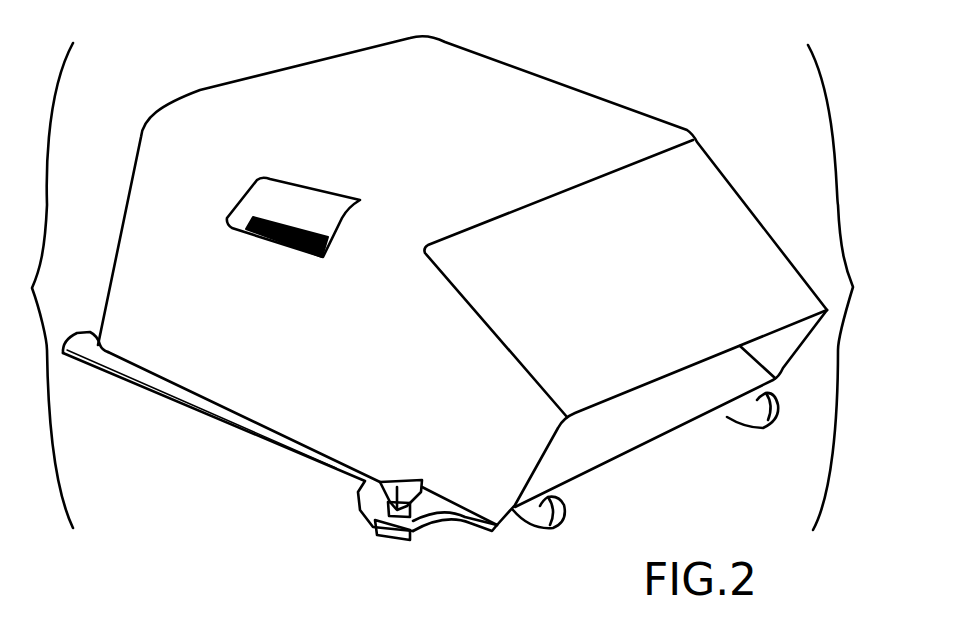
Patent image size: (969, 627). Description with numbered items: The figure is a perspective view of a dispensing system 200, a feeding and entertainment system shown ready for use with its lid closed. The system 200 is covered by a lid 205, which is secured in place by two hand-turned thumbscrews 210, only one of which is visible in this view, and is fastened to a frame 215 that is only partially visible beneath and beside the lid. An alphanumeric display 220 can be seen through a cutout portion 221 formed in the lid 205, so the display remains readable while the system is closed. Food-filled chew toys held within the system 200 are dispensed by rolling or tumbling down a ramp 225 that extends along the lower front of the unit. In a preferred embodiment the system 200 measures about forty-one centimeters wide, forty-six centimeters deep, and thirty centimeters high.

The dispensing system 200 is at (465, 286).
The lid 205 is at (623, 105).
The hand-turned thumbscrew 210 is at (390, 493).
The frame 215 is at (408, 538).
The alphanumeric display 220 is at (252, 218).
The cutout portion 221 is at (255, 177).
The ramp 225 is at (657, 423).